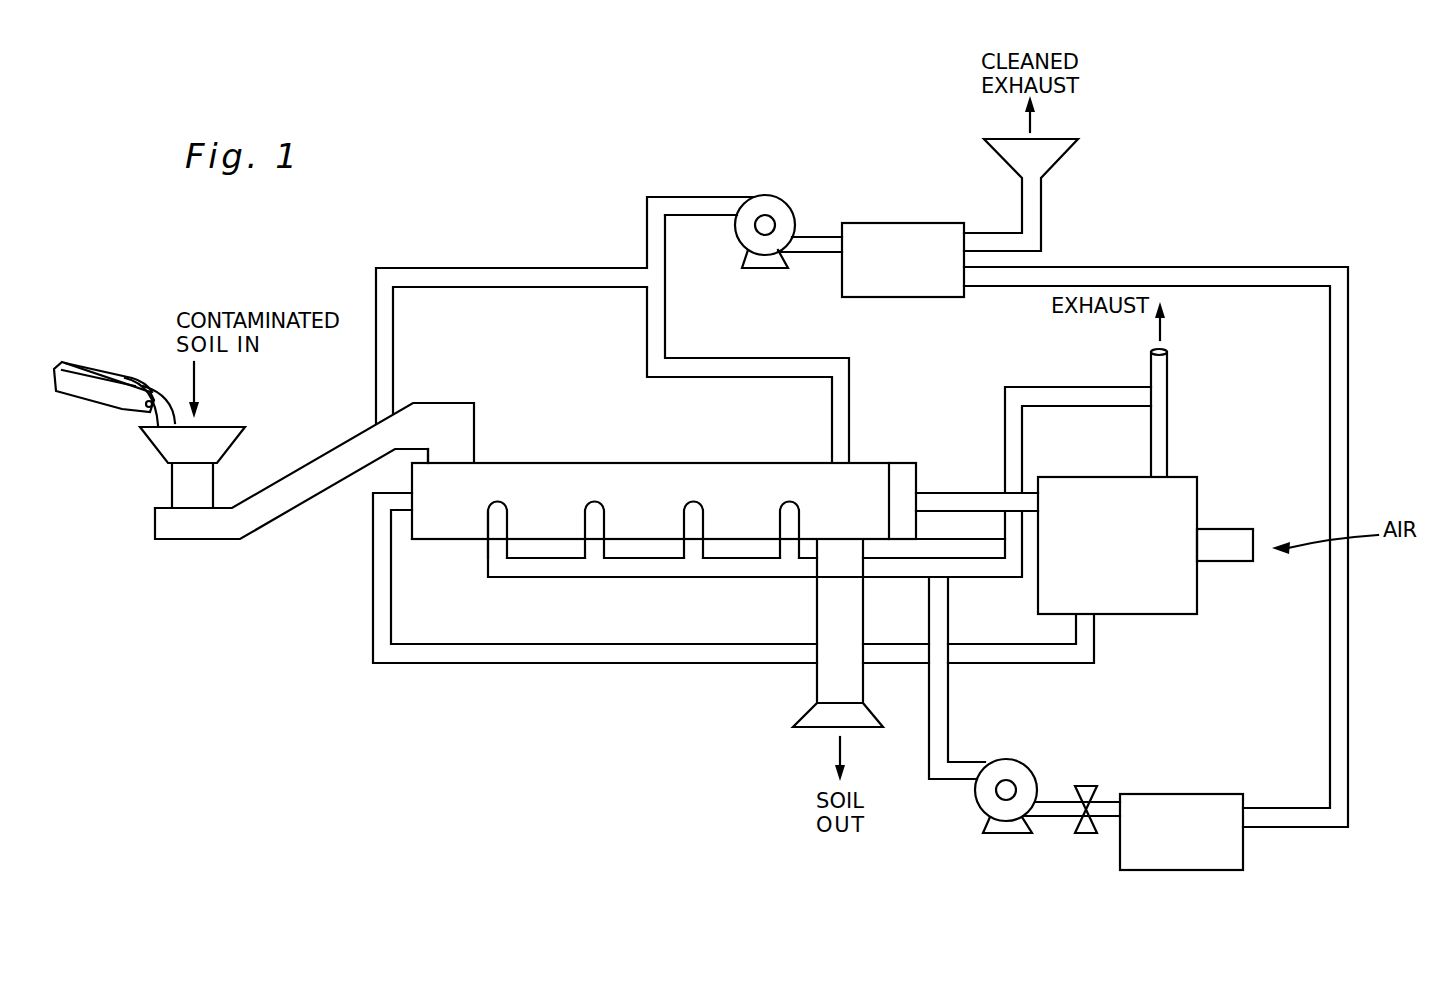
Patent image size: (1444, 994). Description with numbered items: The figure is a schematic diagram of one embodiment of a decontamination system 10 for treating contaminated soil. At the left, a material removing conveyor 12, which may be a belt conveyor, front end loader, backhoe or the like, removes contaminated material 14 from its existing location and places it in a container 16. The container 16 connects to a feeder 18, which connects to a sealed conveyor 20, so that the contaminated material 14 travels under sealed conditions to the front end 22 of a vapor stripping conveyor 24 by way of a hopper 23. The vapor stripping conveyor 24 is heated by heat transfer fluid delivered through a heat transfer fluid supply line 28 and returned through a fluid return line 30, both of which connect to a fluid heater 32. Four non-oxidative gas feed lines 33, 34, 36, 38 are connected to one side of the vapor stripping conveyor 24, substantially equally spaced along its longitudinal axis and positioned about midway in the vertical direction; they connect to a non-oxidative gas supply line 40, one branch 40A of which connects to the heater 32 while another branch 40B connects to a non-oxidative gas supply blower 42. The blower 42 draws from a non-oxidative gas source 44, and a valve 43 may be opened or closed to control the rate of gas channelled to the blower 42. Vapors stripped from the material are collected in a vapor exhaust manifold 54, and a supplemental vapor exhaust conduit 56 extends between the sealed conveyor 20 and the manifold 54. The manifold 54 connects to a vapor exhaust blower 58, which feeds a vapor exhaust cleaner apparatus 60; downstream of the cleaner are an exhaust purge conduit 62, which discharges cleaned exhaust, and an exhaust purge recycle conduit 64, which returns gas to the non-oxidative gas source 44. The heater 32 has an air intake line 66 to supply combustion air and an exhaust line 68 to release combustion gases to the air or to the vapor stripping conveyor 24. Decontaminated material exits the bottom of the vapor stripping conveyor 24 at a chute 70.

The decontamination system 10 is at (330, 648).
The material removing conveyor 12 is at (104, 407).
The contaminated material 14 is at (141, 383).
The container 16 is at (222, 425).
The feeder 18 is at (180, 502).
The sealed conveyor 20 is at (284, 497).
The front end 22 is at (447, 500).
The hopper 23 is at (428, 455).
The vapor stripping conveyor 24 is at (452, 541).
The heat transfer fluid supply line 28 is at (960, 492).
The fluid return line 30 is at (507, 664).
The fluid heater 32 is at (1103, 477).
The non-oxidative gas feed line 33 is at (507, 548).
The non-oxidative gas feed line 34 is at (605, 548).
The non-oxidative gas feed line 36 is at (704, 548).
The non-oxidative gas feed line 38 is at (801, 525).
The non-oxidative gas supply line 40 is at (677, 578).
The branch of non-oxidative gas supply line 40A is at (982, 578).
The branch of non-oxidative gas supply line 40B is at (948, 715).
The non-oxidative gas supply blower 42 is at (975, 800).
The valve 43 is at (1090, 835).
The non-oxidative gas source 44 is at (1205, 793).
The vapor exhaust manifold 54 is at (665, 335).
The supplemental vapor exhaust conduit 56 is at (463, 267).
The vapor exhaust blower 58 is at (762, 195).
The vapor exhaust cleaner apparatus 60 is at (901, 222).
The exhaust purge conduit 62 is at (1042, 204).
The exhaust purge recycle conduit 64 is at (1349, 316).
The air intake line 66 is at (1225, 562).
The exhaust line 68 is at (1168, 378).
The chute 70 is at (817, 680).